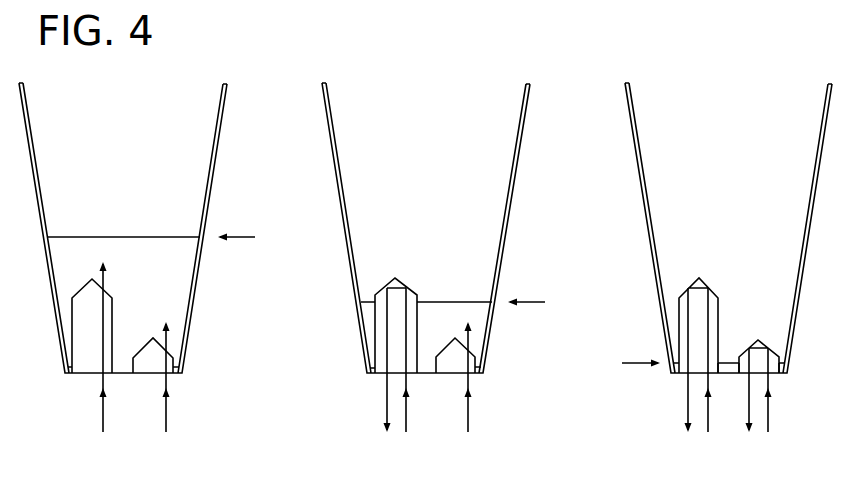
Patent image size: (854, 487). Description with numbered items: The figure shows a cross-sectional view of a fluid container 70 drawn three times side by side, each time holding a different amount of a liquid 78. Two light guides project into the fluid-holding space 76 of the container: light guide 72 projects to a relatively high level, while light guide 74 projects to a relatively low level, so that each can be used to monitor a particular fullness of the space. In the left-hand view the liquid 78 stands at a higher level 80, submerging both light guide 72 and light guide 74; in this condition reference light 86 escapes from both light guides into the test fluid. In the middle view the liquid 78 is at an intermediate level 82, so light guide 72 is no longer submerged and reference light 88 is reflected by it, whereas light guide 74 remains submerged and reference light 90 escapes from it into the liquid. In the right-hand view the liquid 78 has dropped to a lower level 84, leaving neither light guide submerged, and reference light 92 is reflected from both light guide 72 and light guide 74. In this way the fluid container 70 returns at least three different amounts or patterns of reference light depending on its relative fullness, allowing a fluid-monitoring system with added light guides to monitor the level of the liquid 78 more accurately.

The fluid container 70 is at (29, 117).
The light guide 72 is at (112, 290).
The light guide 74 is at (139, 346).
The fluid-holding space 76 is at (163, 87).
The liquid 78 is at (83, 234).
The higher level 80 is at (251, 237).
The intermediate level 82 is at (541, 302).
The lower level 84 is at (626, 363).
The reference light 86 is at (96, 413).
The reference light 88 is at (411, 412).
The reference light 90 is at (473, 412).
The reference light 92 is at (747, 409).